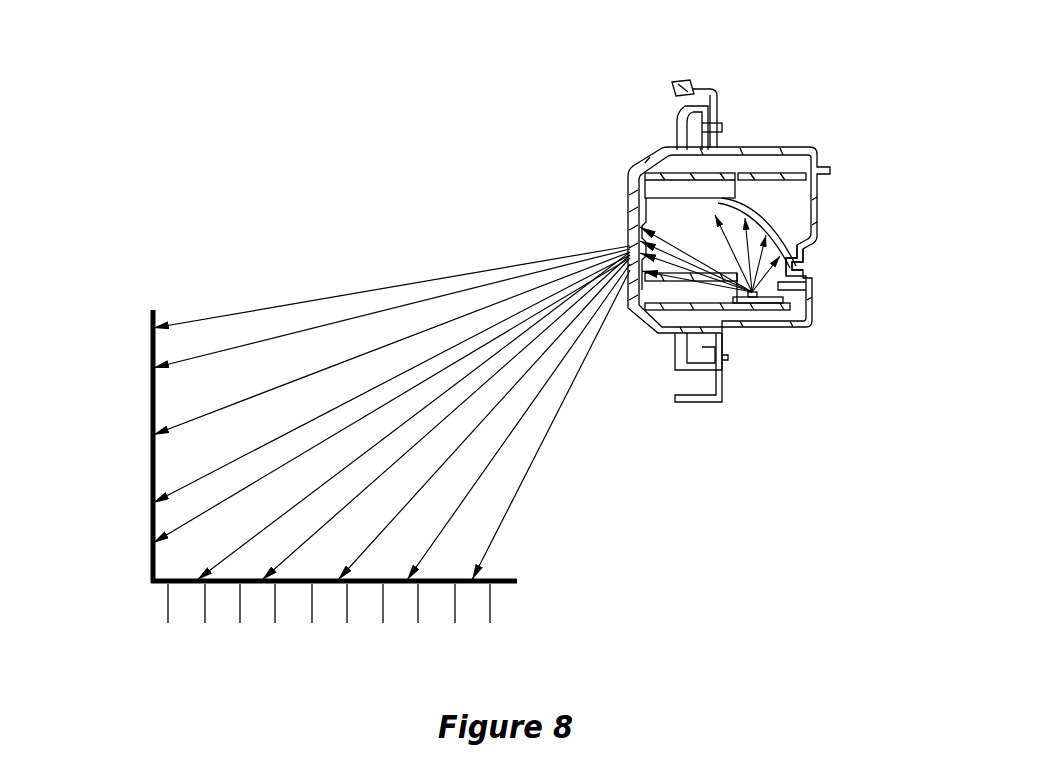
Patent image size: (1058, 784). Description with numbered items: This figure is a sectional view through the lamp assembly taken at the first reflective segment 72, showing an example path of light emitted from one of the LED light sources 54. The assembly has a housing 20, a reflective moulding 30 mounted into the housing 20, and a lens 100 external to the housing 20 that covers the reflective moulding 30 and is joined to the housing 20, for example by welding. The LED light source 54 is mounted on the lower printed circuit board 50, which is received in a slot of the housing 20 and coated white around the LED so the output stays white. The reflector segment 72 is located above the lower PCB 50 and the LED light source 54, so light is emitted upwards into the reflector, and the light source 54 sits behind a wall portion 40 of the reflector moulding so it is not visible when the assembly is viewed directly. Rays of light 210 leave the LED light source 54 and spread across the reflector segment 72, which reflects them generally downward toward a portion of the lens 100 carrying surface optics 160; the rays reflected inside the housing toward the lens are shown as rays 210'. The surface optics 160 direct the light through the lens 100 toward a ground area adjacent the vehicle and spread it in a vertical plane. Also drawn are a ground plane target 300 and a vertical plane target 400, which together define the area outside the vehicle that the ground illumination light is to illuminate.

The housing 20 is at (689, 82).
The reflective moulding 30 is at (714, 175).
The wall portion 40 is at (745, 300).
The lower printed circuit board 50 is at (808, 300).
The light source 54 is at (710, 338).
The first reflective segment 72 is at (772, 237).
The lens 100 is at (628, 175).
The surface optics 160 is at (632, 244).
The rays of light 210 is at (837, 260).
The light rays inside housing 210' is at (632, 231).
The ground plane target 300 is at (340, 584).
The vertical plane target 400 is at (153, 402).